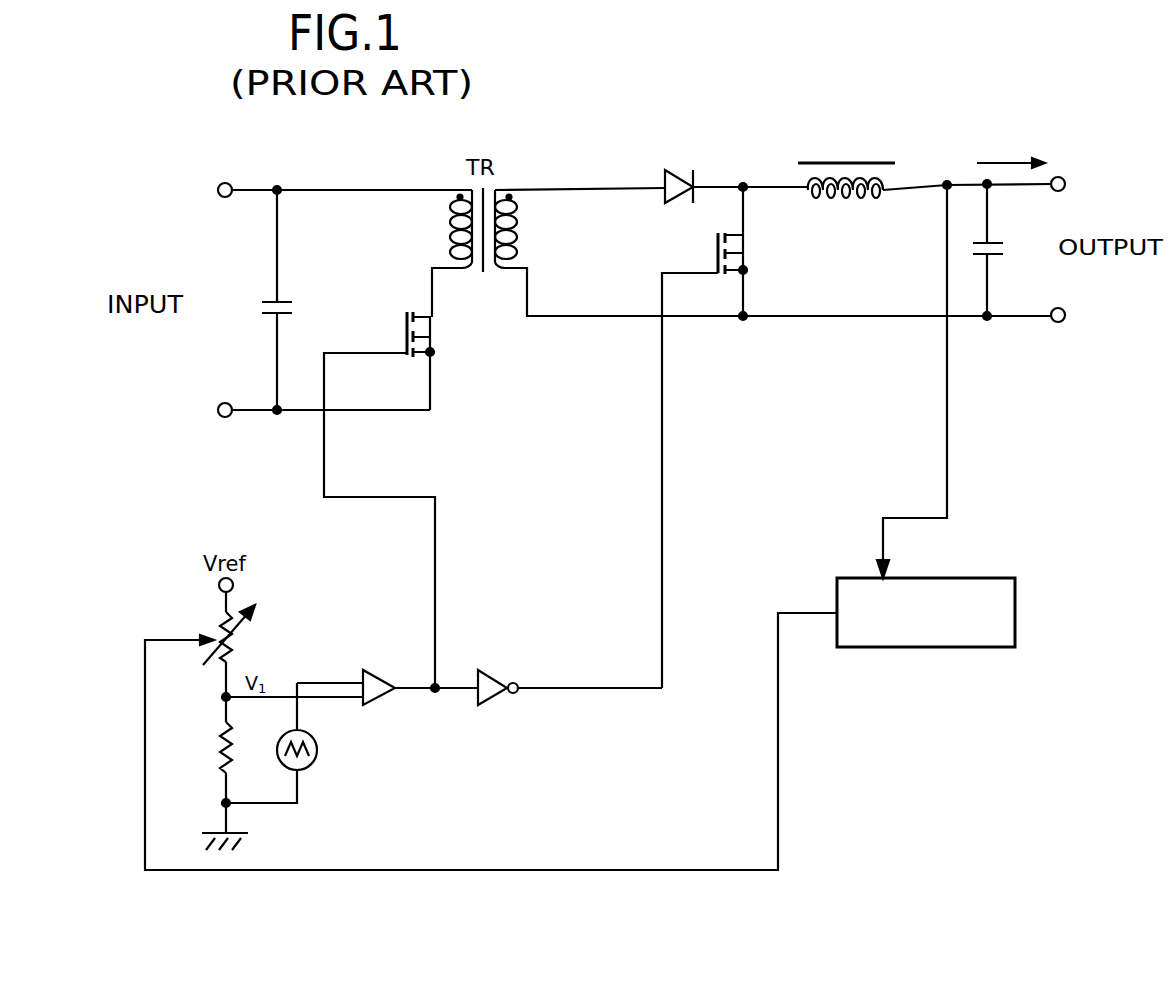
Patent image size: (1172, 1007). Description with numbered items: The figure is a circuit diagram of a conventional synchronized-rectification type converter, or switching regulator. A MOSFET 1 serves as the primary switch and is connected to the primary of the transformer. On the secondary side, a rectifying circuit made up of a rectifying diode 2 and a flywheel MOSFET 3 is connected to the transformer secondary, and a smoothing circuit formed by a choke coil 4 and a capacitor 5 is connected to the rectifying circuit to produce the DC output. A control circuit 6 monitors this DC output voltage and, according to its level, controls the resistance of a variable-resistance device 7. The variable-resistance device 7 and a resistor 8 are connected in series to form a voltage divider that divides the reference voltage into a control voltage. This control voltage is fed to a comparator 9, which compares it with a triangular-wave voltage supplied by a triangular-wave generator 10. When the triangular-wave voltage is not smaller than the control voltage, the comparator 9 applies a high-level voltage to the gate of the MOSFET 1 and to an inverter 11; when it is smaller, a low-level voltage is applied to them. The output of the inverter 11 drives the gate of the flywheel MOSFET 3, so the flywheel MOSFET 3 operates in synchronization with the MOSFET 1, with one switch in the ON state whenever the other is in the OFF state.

The MOSFET 1 is at (432, 325).
The rectifying diode 2 is at (675, 167).
The flywheel MOSFET 3 is at (742, 245).
The choke coil 4 is at (857, 160).
The capacitor 5 is at (998, 258).
The control circuit 6 is at (837, 578).
The variable-resistance device 7 is at (240, 640).
The resistor 8 is at (220, 753).
The comparator 9 is at (377, 705).
The triangular-wave generator 10 is at (317, 750).
The inverter 11 is at (485, 705).